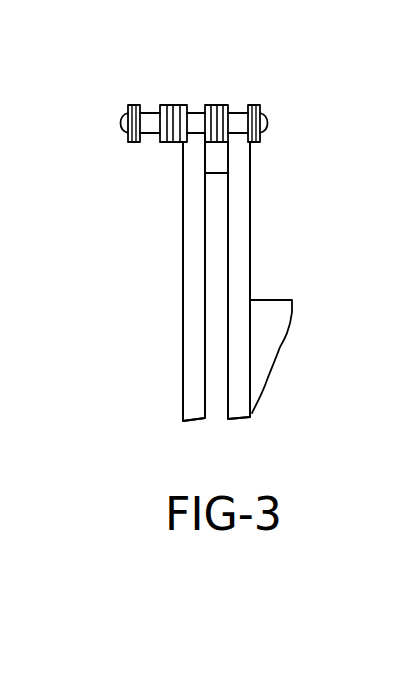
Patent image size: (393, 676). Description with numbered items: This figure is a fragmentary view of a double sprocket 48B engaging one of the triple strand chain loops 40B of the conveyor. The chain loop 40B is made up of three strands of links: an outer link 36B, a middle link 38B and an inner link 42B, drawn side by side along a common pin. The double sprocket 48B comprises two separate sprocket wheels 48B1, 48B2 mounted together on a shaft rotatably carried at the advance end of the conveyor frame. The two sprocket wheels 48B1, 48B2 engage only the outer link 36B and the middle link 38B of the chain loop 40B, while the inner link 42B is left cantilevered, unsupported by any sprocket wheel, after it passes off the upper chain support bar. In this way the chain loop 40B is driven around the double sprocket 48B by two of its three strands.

The outer link 36B is at (242, 108).
The middle link 38B is at (195, 110).
The triple strand chain loop 40B is at (276, 105).
The inner link 42B is at (152, 110).
The double sprocket 48B is at (265, 190).
The sprocket wheel 48B1 is at (252, 250).
The sprocket wheel 48B2 is at (183, 215).